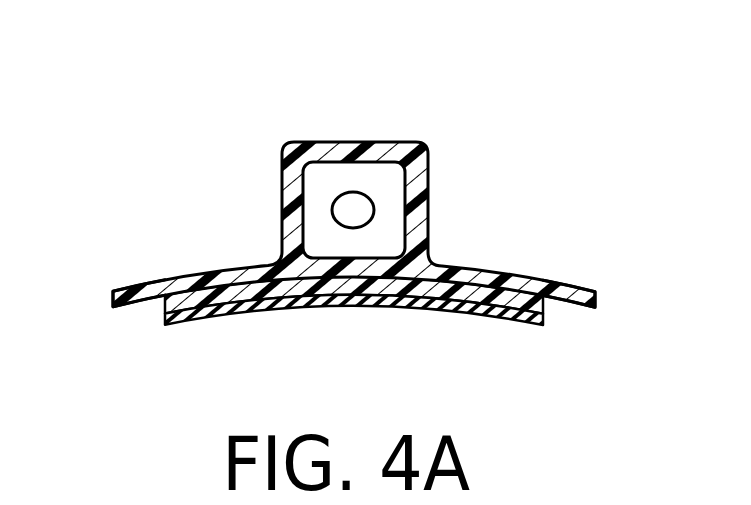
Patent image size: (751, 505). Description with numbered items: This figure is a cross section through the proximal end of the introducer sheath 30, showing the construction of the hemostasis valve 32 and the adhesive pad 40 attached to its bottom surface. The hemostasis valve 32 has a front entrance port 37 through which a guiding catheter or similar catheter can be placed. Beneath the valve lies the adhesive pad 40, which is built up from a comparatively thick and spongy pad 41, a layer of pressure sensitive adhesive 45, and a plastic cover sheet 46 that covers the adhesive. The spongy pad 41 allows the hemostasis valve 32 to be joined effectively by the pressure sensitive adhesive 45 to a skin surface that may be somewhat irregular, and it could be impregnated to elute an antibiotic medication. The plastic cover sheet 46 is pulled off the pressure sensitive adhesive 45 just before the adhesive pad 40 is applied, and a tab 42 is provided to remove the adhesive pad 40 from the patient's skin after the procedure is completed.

The introducer sheath 30 is at (373, 225).
The hemostasis valve 32 is at (345, 143).
The front entrance port 37 is at (367, 220).
The adhesive pad 40 is at (445, 303).
The spongy pad 41 is at (165, 299).
The tab 42 is at (582, 308).
The pressure sensitive adhesive 45 is at (541, 316).
The plastic cover sheet 46 is at (483, 318).